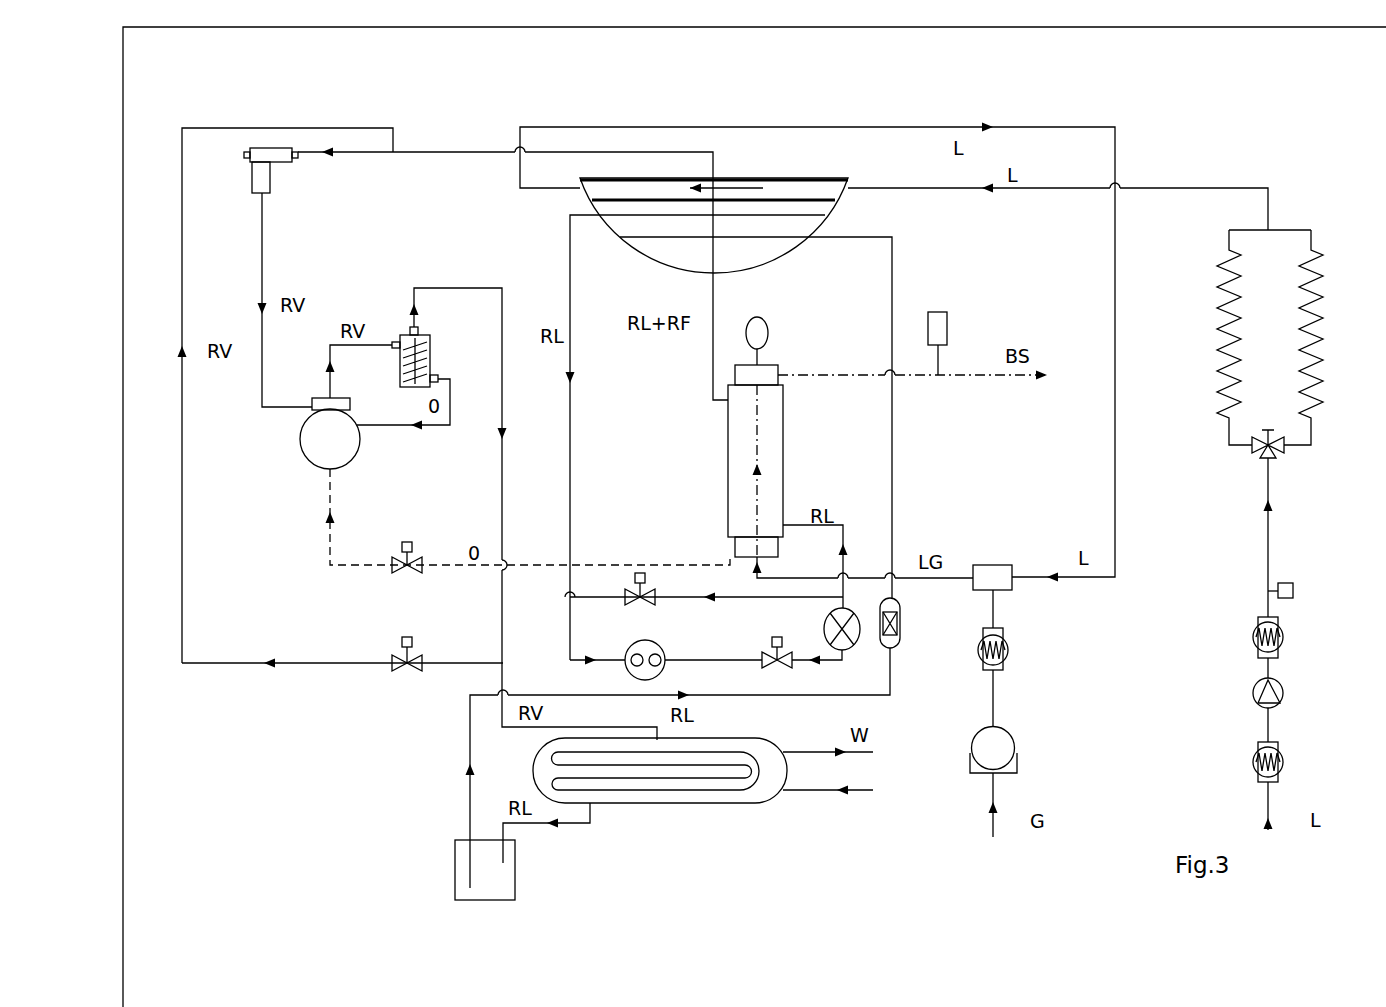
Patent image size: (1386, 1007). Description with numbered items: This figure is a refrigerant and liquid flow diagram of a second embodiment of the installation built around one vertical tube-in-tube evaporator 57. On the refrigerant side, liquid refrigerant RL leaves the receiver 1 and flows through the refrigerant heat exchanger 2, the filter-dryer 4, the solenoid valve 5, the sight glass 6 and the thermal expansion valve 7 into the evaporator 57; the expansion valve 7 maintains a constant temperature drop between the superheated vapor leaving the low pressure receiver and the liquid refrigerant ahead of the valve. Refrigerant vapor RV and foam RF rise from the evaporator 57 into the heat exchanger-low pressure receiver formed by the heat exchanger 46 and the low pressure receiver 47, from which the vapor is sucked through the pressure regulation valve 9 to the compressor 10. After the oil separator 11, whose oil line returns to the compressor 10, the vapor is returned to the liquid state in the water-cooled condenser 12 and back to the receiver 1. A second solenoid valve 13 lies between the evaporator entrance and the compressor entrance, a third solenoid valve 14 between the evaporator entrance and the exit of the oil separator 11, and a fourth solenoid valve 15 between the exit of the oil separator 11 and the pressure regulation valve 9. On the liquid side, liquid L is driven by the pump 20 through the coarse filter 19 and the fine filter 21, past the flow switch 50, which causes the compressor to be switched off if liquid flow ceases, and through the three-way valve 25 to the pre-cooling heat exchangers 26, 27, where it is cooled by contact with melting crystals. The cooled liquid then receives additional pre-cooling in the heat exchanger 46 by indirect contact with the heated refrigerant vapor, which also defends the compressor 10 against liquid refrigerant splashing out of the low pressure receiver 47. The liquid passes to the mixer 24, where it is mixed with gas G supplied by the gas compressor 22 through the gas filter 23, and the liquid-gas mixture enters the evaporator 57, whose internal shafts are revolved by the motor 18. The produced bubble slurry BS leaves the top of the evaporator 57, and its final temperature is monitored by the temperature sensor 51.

The receiver 1 is at (463, 863).
The refrigerant heat exchanger 2 is at (727, 210).
The filter-dryer 4 is at (898, 633).
The solenoid valve 5 is at (767, 653).
The sight glass 6 is at (638, 650).
The thermal expansion valve 7 is at (847, 635).
The pressure regulation valve 9 is at (268, 175).
The compressor 10 is at (307, 457).
The oil separator 11 is at (427, 367).
The condenser 12 is at (660, 757).
The second solenoid valve 13 is at (397, 573).
The third solenoid valve 14 is at (637, 593).
The fourth solenoid valve 15 is at (397, 673).
The motor 18 is at (768, 335).
The coarse filter 19 is at (1278, 763).
The pump 20 is at (1277, 697).
The fine filter 21 is at (1282, 645).
The gas compressor 22 is at (1007, 745).
The gas filter 23 is at (1010, 655).
The mixer 24 is at (995, 570).
The three-way valve 25 is at (1275, 453).
The pre-cooling heat exchanger 26 is at (1222, 352).
The pre-cooling heat exchanger 27 is at (1310, 352).
The heat exchanger of HE-LPR 46 is at (714, 164).
The low pressure receiver 47 is at (733, 208).
The flow switch 50 is at (1290, 585).
The temperature sensor 51 is at (938, 330).
The evaporator 57 is at (742, 493).